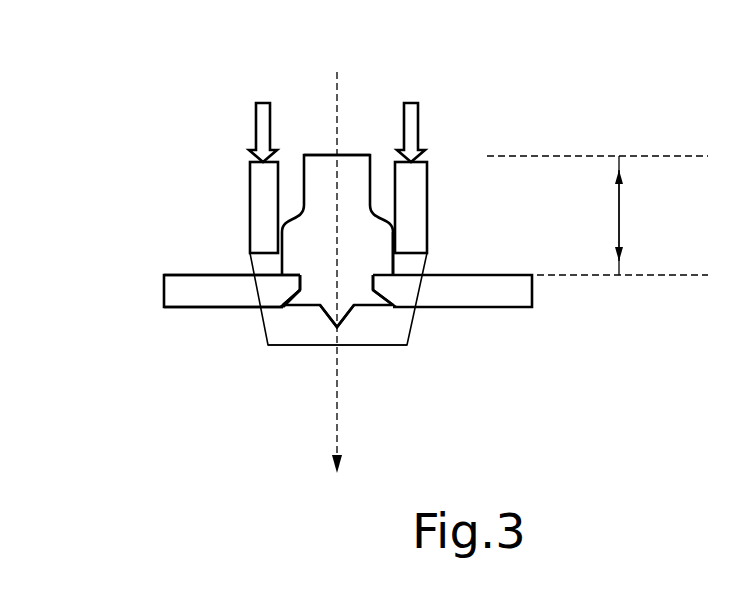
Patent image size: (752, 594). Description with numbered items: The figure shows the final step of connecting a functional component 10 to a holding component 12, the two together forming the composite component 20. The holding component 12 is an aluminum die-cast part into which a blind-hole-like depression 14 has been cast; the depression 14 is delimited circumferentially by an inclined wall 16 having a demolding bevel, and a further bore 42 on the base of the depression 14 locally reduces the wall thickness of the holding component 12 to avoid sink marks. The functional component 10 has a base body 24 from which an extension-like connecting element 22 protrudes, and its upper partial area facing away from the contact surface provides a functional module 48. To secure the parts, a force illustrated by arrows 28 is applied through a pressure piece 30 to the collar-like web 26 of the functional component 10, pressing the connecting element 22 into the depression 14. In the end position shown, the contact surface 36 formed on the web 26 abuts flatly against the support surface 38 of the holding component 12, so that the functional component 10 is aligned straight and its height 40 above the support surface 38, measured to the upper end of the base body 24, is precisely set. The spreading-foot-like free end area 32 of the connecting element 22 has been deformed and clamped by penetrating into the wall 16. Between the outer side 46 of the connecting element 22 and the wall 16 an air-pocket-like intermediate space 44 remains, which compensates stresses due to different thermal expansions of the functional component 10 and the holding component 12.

The functional component 10 is at (350, 150).
The holding component 12 is at (205, 275).
The depression 14 is at (290, 275).
The wall 16 is at (263, 306).
The composite component 20 is at (130, 102).
The connecting element 22 is at (358, 292).
The base body 24 is at (360, 238).
The collar-like web 26 is at (260, 268).
The arrows 28 is at (256, 129).
The pressure piece 30 is at (258, 180).
The free end area 32 is at (268, 345).
The contact surface 36 is at (256, 280).
The support surface 38 is at (410, 275).
The height 40 is at (619, 210).
The further bore 42 is at (322, 316).
The intermediate space 44 is at (385, 289).
The outer side 46 is at (305, 292).
The functional module 48 is at (320, 167).